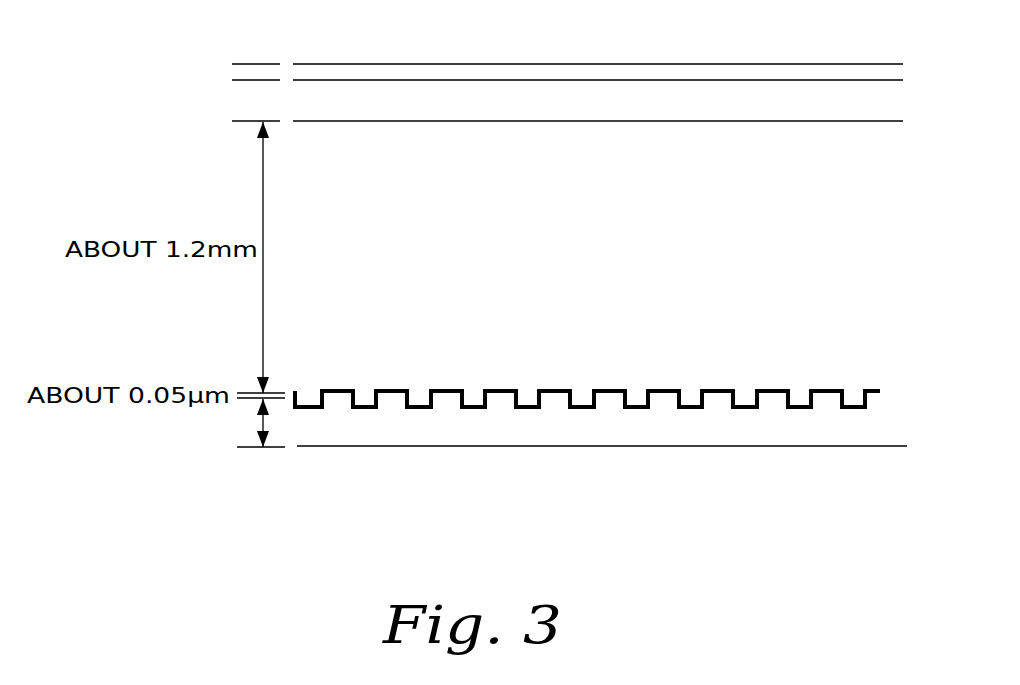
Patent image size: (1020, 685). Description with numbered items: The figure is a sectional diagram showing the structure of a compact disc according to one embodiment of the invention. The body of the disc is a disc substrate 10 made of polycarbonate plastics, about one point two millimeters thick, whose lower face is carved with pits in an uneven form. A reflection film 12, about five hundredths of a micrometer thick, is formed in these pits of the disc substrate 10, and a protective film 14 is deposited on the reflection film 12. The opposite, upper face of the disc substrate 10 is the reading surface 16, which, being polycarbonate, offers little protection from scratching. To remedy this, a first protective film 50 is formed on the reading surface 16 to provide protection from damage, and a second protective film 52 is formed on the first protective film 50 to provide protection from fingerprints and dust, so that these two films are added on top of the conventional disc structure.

The disc substrate 10 is at (588, 252).
The reflection film 12 is at (557, 388).
The protective film 14 is at (582, 430).
The reading surface 16 is at (715, 121).
The first protective film 50 is at (702, 68).
The second protective film 52 is at (592, 90).